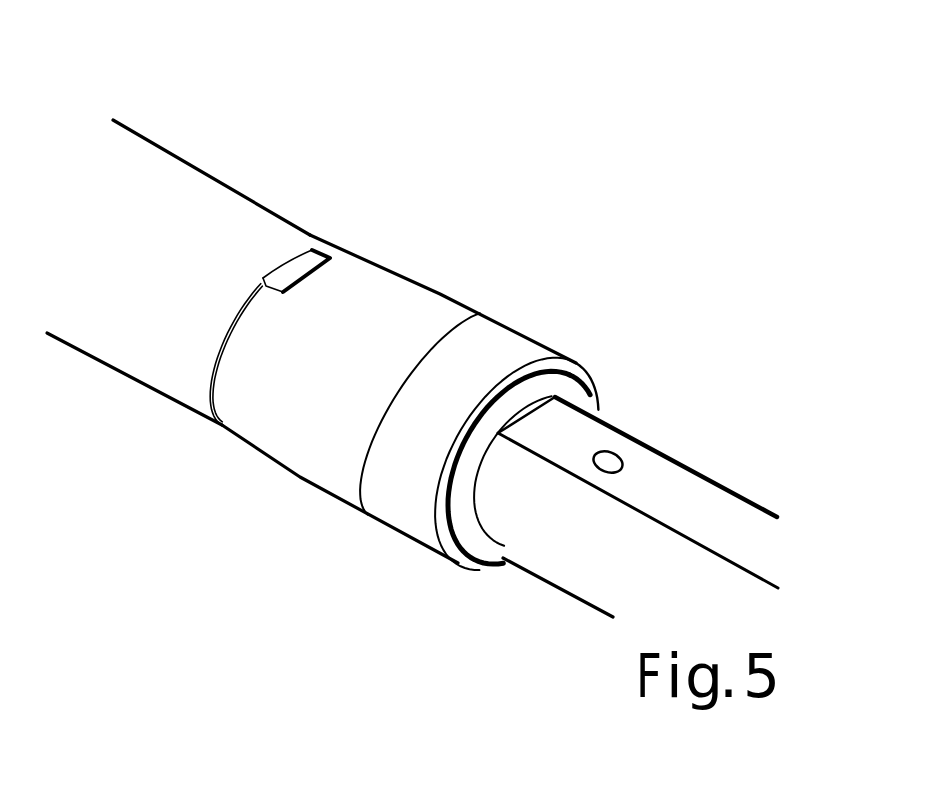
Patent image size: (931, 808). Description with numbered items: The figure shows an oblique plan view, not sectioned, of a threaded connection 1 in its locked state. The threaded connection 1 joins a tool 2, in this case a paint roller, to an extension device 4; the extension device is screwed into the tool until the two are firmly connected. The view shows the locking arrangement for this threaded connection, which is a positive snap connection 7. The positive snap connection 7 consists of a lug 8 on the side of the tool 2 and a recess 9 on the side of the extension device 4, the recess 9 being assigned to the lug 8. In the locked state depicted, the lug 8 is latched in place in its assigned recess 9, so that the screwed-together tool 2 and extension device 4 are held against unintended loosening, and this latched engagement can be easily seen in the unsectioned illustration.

The threaded connection 1 is at (360, 178).
The tool 2 is at (197, 115).
The extension device 4 is at (498, 256).
The positive snap connection 7 is at (278, 318).
The lug 8 is at (265, 248).
The recess 9 is at (323, 289).